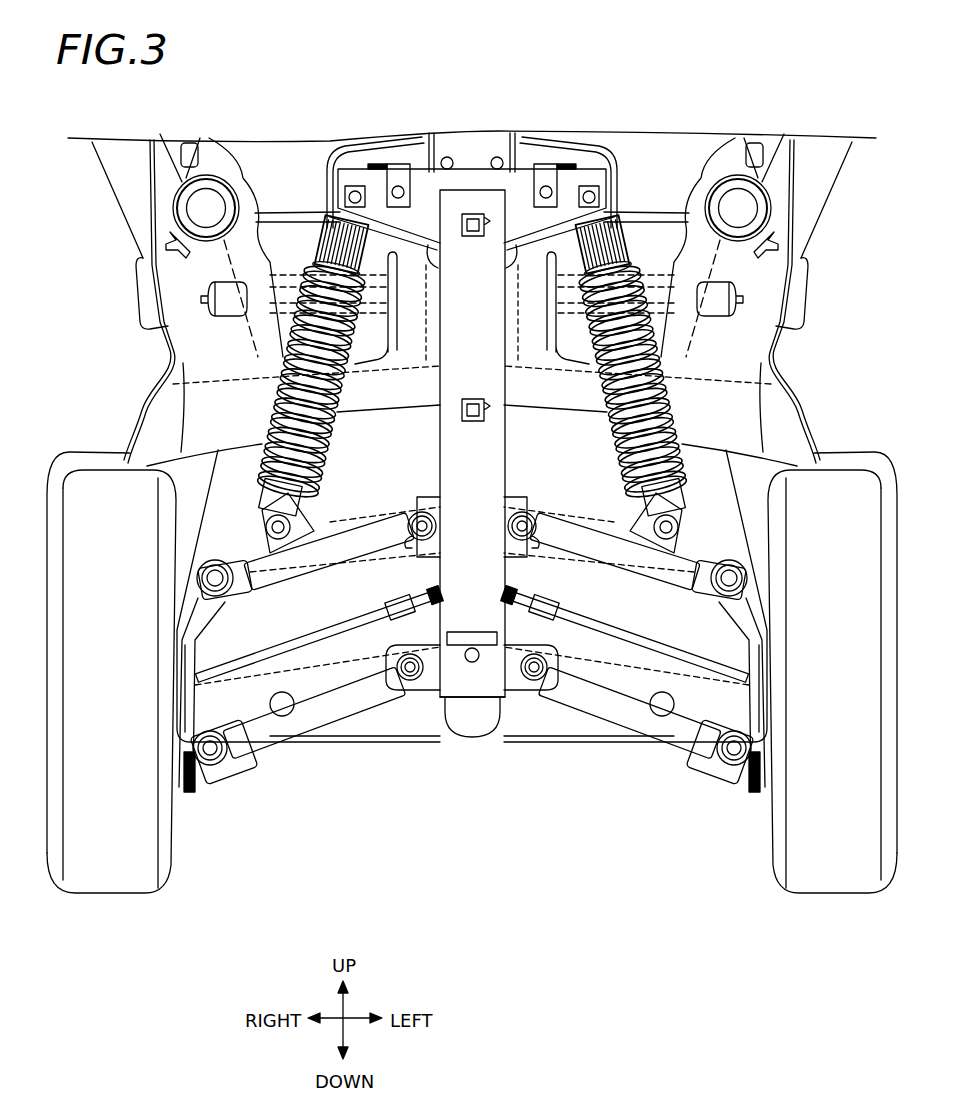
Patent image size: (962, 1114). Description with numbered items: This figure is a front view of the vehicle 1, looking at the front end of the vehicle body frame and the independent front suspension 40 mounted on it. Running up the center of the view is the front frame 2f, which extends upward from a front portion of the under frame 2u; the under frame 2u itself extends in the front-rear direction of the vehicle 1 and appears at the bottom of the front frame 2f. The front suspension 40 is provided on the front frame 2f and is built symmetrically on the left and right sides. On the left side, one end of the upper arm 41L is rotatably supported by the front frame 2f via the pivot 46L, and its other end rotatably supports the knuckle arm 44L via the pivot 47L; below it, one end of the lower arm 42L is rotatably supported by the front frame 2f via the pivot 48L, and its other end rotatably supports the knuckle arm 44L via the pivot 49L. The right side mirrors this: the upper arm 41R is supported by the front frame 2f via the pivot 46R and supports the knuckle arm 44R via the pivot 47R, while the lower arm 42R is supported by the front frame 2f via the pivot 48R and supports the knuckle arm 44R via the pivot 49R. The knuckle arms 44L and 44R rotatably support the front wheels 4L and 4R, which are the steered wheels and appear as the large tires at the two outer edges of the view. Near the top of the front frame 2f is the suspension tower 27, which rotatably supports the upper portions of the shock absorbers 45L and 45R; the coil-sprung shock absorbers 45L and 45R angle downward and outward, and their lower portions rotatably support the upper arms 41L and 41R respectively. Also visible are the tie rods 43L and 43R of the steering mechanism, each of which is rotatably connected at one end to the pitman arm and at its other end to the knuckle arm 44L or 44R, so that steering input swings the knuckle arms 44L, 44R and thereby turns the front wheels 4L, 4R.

The vehicle 1 is at (757, 94).
The suspension tower 27 is at (470, 186).
The front frame 2f is at (498, 468).
The under frame 2u is at (513, 718).
The front suspension 40 is at (597, 806).
The front wheel 4R is at (55, 870).
The front wheel 4L is at (892, 872).
The upper arm 41R is at (318, 565).
The upper arm 41L is at (604, 563).
The lower arm 42R is at (290, 728).
The lower arm 42L is at (655, 728).
The tie rod 43R is at (367, 622).
The tie rod 43L is at (581, 622).
The knuckle arm 44R is at (196, 703).
The knuckle arm 44L is at (750, 702).
The shock absorber 45R is at (272, 417).
The shock absorber 45L is at (672, 417).
The pivot 46R is at (418, 515).
The pivot 46L is at (526, 515).
The pivot 47R is at (215, 573).
The pivot 47L is at (729, 573).
The pivot 48R is at (408, 680).
The pivot 48L is at (537, 680).
The pivot 49R is at (217, 788).
The pivot 49L is at (730, 792).